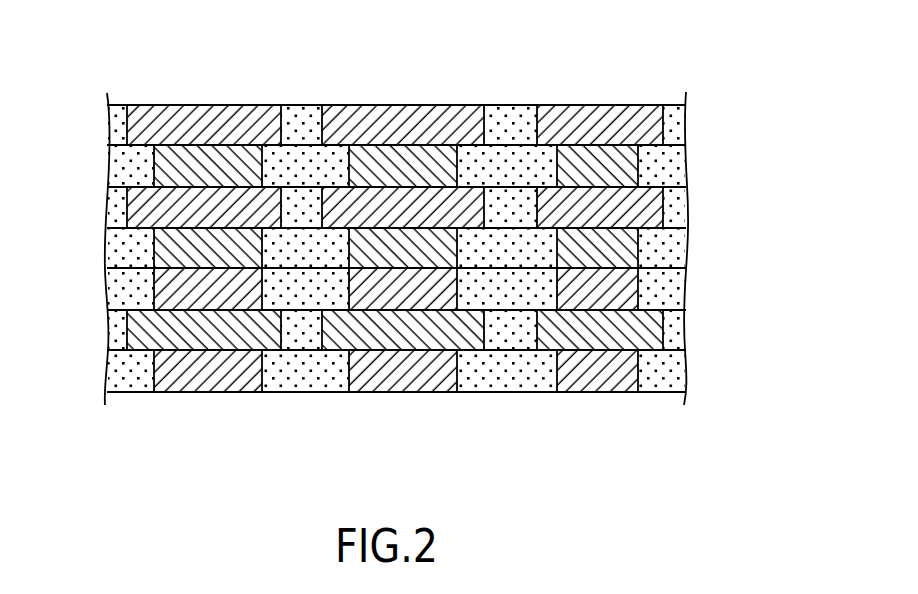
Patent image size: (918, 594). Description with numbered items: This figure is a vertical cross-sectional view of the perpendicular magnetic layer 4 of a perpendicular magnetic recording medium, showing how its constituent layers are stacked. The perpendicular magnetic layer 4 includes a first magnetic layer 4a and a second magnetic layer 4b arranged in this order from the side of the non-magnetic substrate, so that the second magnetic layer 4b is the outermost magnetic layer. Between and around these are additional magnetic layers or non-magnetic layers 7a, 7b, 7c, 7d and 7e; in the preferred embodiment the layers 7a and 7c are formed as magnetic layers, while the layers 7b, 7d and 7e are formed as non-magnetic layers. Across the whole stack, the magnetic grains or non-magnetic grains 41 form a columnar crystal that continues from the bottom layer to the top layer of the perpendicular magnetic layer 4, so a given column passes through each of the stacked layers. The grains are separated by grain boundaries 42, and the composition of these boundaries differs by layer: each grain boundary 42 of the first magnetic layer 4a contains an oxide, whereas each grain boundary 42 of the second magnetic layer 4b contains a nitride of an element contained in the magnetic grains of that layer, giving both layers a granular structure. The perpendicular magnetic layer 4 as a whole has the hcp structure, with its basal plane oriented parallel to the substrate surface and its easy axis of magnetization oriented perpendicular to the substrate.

The perpendicular magnetic layer 4 is at (443, 254).
The first magnetic layer 4a is at (672, 206).
The second magnetic layer 4b is at (672, 126).
The magnetic layer 7a is at (429, 409).
The non-magnetic layer 7b is at (672, 328).
The magnetic layer 7c is at (672, 288).
The non-magnetic layer 7d is at (672, 247).
The non-magnetic layer 7e is at (672, 166).
The magnetic grains or non-magnetic grains 41 is at (403, 393).
The grain boundary 42 is at (505, 393).